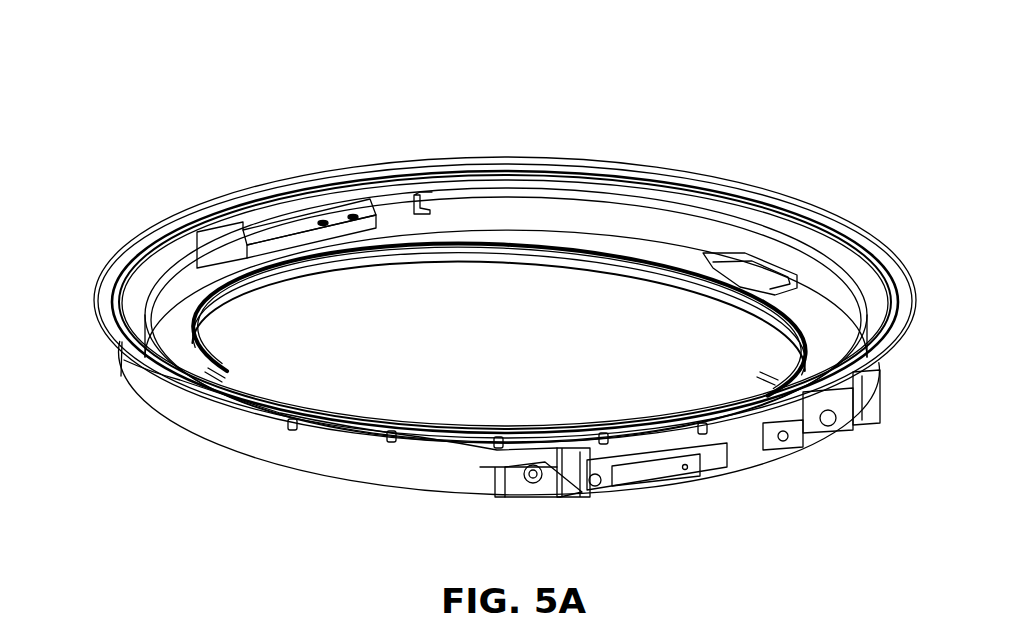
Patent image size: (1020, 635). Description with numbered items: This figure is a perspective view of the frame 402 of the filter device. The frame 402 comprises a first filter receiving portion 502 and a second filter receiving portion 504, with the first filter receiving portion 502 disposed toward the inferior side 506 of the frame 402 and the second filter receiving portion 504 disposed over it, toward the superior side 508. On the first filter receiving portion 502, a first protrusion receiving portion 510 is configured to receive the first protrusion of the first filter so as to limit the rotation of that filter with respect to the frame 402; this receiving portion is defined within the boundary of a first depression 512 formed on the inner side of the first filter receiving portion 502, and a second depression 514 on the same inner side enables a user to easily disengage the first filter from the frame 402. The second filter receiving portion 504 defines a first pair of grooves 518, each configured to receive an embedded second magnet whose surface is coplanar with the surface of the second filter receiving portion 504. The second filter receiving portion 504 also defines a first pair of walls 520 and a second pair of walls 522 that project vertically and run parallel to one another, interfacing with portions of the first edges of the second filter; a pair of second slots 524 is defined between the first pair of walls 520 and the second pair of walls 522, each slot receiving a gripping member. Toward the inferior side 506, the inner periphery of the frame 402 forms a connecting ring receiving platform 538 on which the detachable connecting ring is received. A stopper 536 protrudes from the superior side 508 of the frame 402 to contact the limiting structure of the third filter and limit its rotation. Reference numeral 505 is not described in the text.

The frame 402 is at (480, 288).
The first filter receiving portion 502 is at (455, 266).
The second filter receiving portion 504 is at (506, 225).
The outer flange 505 is at (471, 302).
The inferior side 506 is at (497, 455).
The superior side 508 is at (505, 249).
The first protrusion receiving portion 510 is at (806, 229).
The first depression 512 is at (777, 210).
The second depression 514 is at (265, 349).
The first pair of grooves 518 is at (459, 143).
The first pair of walls 520 is at (506, 320).
The second pair of walls 522 is at (703, 360).
The pair of second slots 524 is at (291, 180).
The stopper 536 is at (506, 276).
The connecting ring receiving platform 538 is at (500, 307).